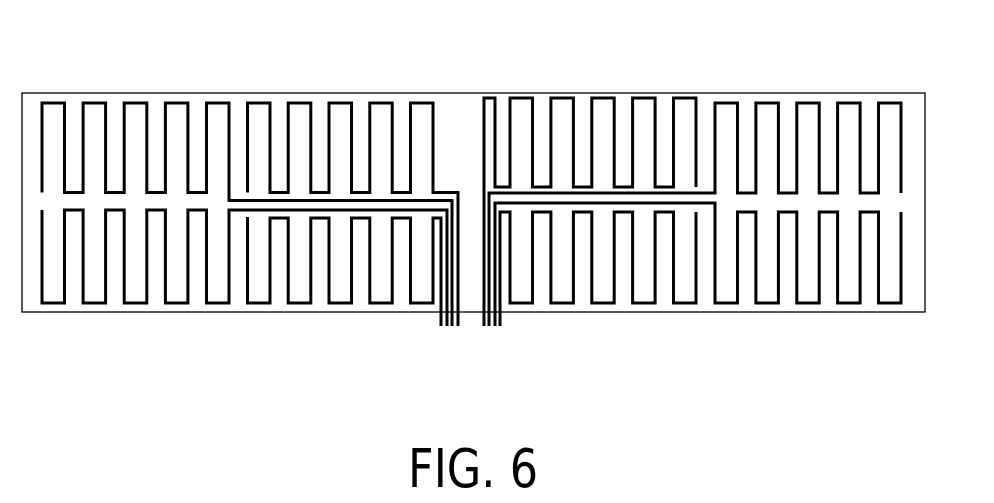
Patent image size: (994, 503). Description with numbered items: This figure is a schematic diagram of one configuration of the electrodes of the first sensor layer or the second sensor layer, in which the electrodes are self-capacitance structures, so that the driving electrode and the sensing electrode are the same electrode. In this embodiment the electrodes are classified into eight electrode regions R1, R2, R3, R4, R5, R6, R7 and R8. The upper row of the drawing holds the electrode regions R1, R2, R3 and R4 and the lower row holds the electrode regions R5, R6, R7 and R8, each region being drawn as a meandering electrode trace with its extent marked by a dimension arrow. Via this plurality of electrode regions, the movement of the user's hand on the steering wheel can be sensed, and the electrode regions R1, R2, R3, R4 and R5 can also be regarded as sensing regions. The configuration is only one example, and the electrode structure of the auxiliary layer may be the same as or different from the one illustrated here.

The electrode region R1 is at (42, 74).
The electrode region R2 is at (437, 74).
The electrode region R3 is at (485, 74).
The electrode region R4 is at (904, 74).
The electrode region R5 is at (42, 332).
The electrode region R6 is at (437, 332).
The electrode region R7 is at (508, 332).
The electrode region R8 is at (904, 332).